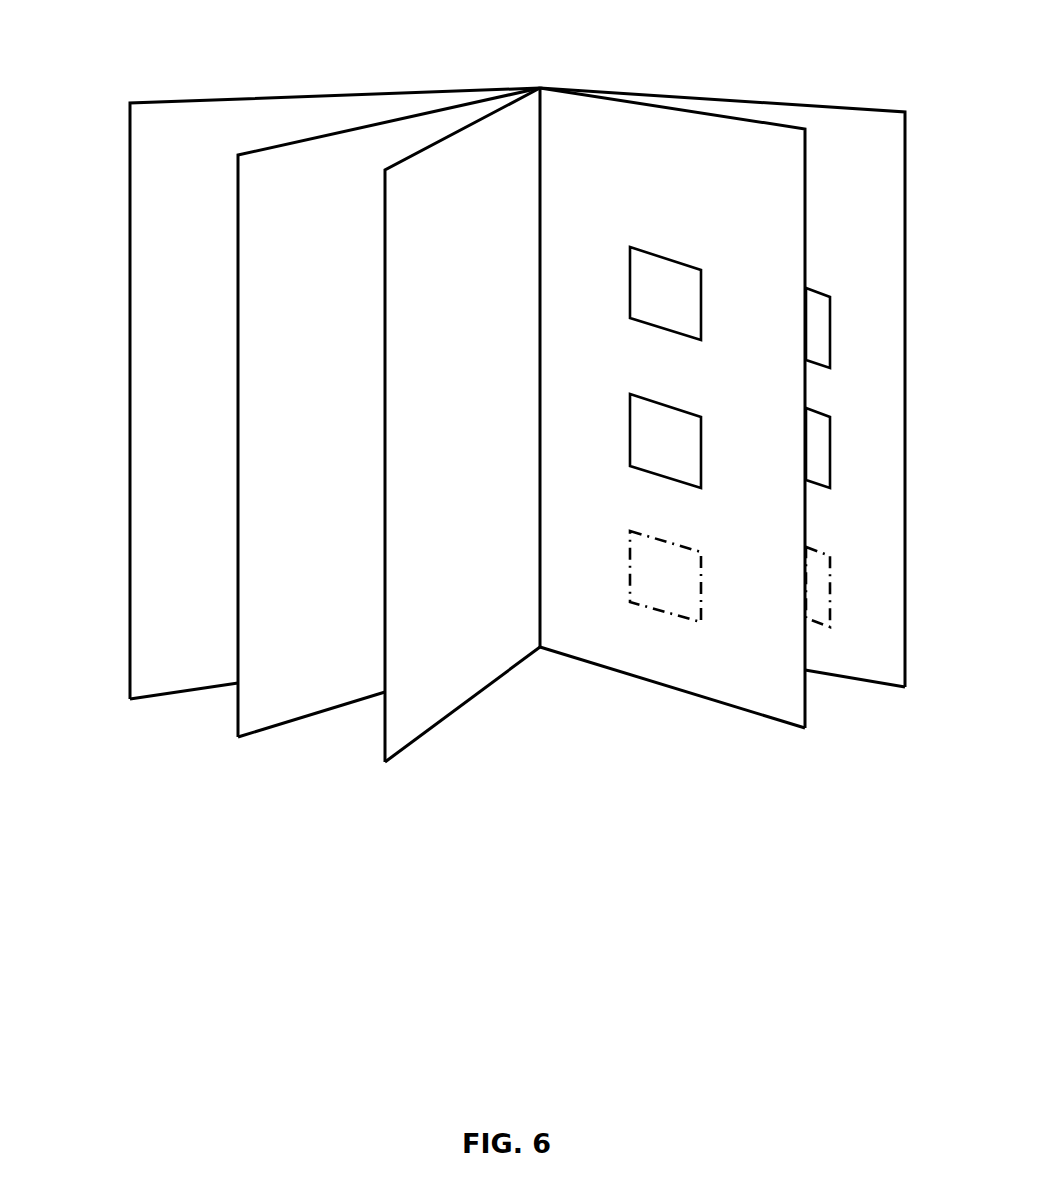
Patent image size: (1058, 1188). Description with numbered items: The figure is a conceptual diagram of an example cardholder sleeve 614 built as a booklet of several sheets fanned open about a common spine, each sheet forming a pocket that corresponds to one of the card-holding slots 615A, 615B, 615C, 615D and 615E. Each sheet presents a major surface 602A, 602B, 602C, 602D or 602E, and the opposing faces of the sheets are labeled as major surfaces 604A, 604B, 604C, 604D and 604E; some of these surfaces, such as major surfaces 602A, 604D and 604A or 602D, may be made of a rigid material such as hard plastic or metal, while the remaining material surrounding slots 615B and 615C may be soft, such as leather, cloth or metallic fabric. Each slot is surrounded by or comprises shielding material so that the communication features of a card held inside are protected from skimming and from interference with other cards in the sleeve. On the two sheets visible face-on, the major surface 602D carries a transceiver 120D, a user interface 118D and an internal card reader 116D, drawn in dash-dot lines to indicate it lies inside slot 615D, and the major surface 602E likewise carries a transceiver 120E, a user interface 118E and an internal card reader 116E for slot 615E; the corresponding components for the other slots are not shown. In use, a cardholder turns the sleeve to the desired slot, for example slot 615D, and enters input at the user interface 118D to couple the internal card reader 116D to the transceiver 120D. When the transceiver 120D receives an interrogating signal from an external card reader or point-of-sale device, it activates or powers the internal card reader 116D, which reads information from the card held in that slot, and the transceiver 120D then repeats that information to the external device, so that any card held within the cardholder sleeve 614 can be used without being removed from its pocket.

The cardholder sleeve 614 is at (652, 60).
The major surface 602A is at (104, 110).
The major surface 602B is at (217, 148).
The major surface 602C is at (357, 190).
The major surface 602D is at (787, 212).
The major surface 602E is at (882, 305).
The major surface 604A is at (165, 222).
The second panel surface 604B is at (277, 280).
The third panel surface 604C is at (442, 700).
The major surface 604D is at (830, 148).
The fifth panel surface 604E is at (896, 82).
The slot 615A is at (130, 673).
The slot 615B is at (238, 717).
The slot 615C is at (385, 730).
The slot 615D is at (805, 717).
The slot 615E is at (905, 672).
The transceiver 120D is at (682, 263).
The transceiver 120E is at (810, 292).
The user interface 118D is at (682, 408).
The user interface 118E is at (810, 408).
The internal card reader 116D is at (675, 545).
The internal card reader 116E is at (810, 548).